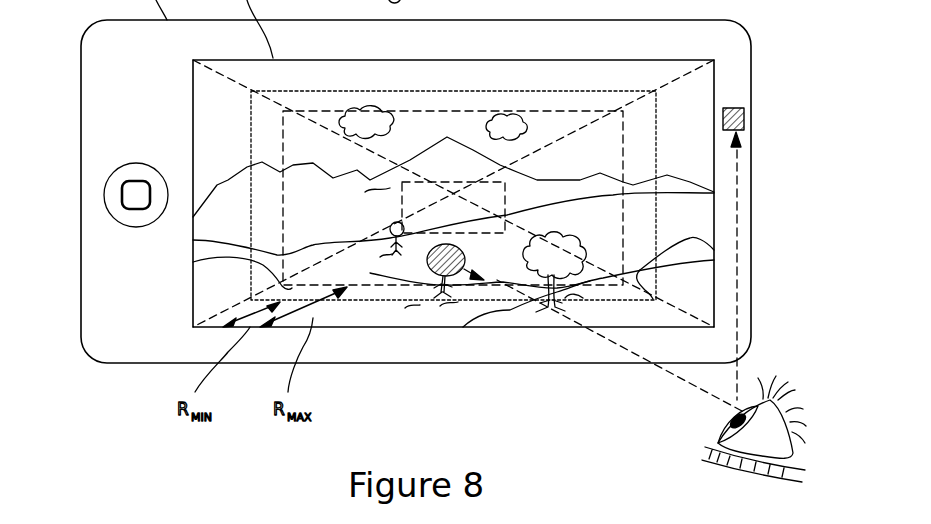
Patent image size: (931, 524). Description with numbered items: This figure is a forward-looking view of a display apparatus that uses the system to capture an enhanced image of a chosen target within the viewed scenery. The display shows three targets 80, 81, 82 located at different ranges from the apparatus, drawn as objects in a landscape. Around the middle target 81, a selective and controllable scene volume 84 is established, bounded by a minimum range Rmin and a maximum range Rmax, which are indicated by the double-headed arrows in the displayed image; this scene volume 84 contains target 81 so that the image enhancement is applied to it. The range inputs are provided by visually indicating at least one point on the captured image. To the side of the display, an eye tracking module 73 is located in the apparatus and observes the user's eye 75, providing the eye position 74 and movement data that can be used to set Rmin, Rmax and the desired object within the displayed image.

The eye tracking module 73 is at (742, 100).
The position 74 is at (740, 200).
The eye 75 is at (757, 397).
The target 80 is at (387, 243).
The target 81 is at (427, 268).
The target 82 is at (537, 258).
The scene volume 84 is at (193, 262).